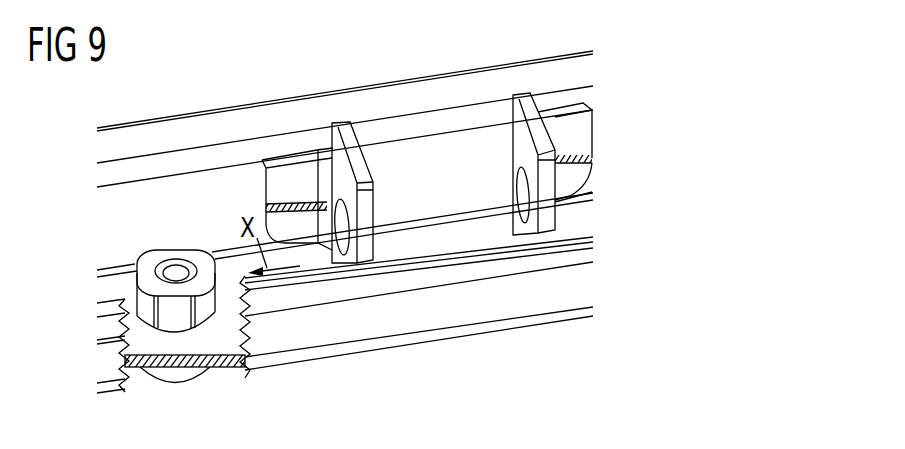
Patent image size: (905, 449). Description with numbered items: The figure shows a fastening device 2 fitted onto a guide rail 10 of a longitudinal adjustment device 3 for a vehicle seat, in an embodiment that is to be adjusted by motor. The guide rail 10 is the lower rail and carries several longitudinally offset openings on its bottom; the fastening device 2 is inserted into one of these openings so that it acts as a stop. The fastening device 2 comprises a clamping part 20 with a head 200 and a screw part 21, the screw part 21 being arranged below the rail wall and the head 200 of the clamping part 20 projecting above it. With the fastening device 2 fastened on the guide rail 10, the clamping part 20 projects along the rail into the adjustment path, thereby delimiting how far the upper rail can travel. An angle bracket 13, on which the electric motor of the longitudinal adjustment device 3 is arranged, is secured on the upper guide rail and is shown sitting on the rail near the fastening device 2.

The fastening device 2 is at (200, 399).
The longitudinal adjustment device 3 is at (383, 70).
The guide rail 10 is at (350, 336).
The angle bracket 13 is at (520, 127).
The clamping part 20 is at (197, 313).
The screw part 21 is at (180, 378).
The head 200 is at (180, 250).